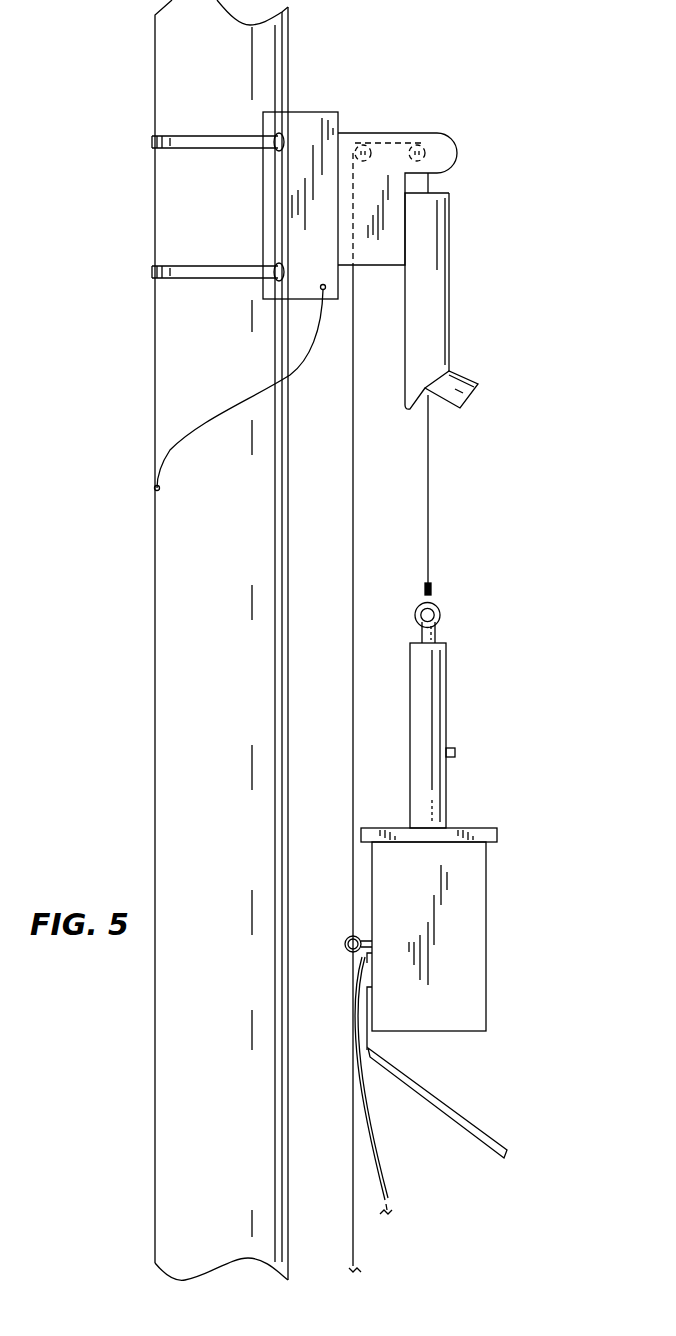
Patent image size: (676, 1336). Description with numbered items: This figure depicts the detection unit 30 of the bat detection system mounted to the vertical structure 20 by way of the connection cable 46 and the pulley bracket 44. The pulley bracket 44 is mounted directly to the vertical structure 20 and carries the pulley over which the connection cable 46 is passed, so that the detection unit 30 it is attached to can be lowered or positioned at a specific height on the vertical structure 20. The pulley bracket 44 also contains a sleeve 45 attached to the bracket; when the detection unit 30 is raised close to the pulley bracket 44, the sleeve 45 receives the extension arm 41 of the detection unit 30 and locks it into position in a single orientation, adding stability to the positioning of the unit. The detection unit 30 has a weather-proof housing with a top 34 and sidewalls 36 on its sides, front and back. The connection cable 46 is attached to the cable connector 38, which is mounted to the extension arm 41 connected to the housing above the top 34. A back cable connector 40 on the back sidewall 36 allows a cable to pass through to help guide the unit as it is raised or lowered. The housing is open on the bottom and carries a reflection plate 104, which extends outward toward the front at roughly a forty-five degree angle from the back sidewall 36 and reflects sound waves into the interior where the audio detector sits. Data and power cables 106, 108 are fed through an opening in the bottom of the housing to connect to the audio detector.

The vertical structure 20 is at (155, 87).
The pulley bracket 44 is at (388, 133).
The sleeve 45 is at (449, 258).
The connection cable 46 is at (430, 485).
The cable connector 38 is at (432, 605).
The extension arm 41 is at (447, 697).
The top 34 is at (473, 828).
The detection unit 30 is at (555, 826).
The sidewalls 36 is at (486, 930).
The back cable connector 40 is at (346, 936).
The reflection plate 104 is at (462, 1115).
The data cable 106 is at (385, 1177).
The power cable 108 is at (382, 1213).